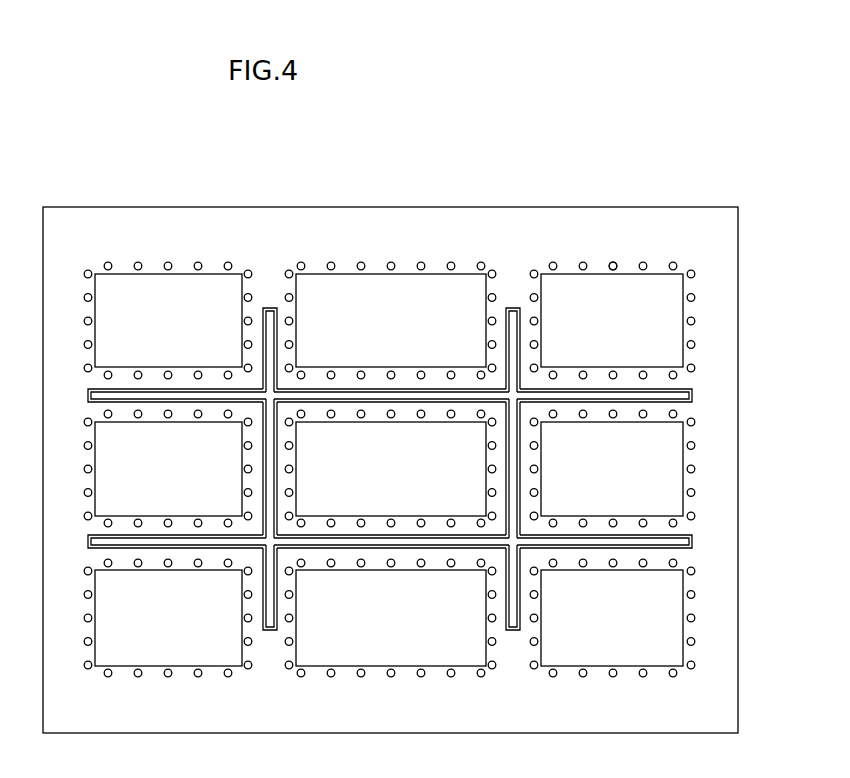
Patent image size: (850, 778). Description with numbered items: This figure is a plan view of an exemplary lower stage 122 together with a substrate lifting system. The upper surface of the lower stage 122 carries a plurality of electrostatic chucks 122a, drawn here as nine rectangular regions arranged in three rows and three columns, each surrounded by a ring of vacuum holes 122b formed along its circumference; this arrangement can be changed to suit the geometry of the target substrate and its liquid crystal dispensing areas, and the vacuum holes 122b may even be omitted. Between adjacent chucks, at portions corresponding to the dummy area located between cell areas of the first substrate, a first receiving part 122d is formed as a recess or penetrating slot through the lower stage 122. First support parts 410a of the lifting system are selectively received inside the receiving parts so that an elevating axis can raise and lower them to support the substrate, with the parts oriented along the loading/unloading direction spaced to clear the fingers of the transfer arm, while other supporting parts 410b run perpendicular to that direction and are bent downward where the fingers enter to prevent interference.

The lower stage 122 is at (262, 225).
The electrostatic chuck 122a is at (405, 288).
The vacuum hole 122b is at (612, 263).
The first receiving part 122d is at (693, 397).
The first support part 410a is at (693, 542).
The other supporting part 410b is at (513, 327).